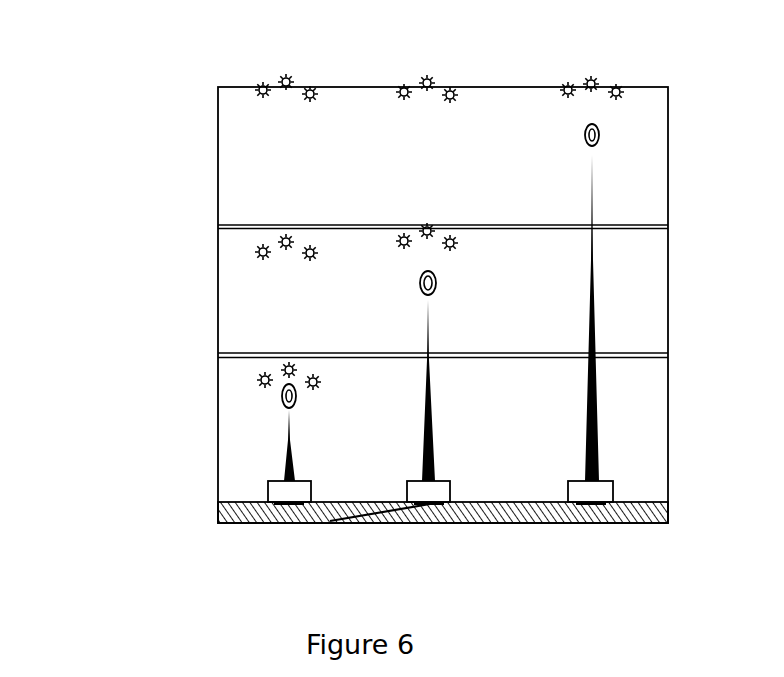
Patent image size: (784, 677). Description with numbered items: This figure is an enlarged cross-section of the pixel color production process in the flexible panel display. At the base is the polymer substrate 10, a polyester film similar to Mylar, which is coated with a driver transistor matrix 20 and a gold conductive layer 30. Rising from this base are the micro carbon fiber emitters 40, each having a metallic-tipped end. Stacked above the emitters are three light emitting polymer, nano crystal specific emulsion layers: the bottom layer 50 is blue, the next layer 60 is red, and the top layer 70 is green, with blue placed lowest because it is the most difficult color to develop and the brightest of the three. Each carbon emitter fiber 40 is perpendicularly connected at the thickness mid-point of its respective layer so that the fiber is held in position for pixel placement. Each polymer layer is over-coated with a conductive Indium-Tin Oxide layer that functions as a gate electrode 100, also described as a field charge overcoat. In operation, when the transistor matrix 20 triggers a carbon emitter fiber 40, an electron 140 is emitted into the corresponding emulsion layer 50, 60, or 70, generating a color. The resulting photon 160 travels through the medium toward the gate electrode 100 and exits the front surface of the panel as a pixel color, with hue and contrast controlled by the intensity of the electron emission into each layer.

The polymer substrate 10 is at (642, 510).
The driver transistor matrix 20 is at (330, 521).
The gold conductive layer 30 is at (272, 490).
The micro carbon fiber emitter 40 is at (291, 462).
The bottom light emitting polymer layer 50 is at (633, 410).
The red light emitting polymer layer 60 is at (636, 277).
The top light emitting polymer layer 70 is at (640, 143).
The gate electrode 100 is at (218, 228).
The electron 140 is at (282, 398).
The photon 160 is at (591, 84).